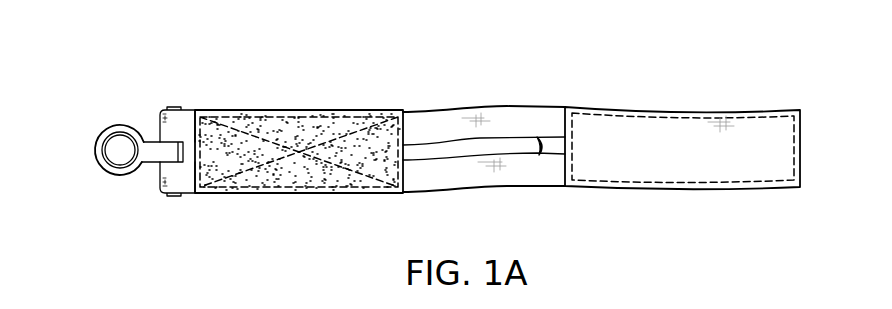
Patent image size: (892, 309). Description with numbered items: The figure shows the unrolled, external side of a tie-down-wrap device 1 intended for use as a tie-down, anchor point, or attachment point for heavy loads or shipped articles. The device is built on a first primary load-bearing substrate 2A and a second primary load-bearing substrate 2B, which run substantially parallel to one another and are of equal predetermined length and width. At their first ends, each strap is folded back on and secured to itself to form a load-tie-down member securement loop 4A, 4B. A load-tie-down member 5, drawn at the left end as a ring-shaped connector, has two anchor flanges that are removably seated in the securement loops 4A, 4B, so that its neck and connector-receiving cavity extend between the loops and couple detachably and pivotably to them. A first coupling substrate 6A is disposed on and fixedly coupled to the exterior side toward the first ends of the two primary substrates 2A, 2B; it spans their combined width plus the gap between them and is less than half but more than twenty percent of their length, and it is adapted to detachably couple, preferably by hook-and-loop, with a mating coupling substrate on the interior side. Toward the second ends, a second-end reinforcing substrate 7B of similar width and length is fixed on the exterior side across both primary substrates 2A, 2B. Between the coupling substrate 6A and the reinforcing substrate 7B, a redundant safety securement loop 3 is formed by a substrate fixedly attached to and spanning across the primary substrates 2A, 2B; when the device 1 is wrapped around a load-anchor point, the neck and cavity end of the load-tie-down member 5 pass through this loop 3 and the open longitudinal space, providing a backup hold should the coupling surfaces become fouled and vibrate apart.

The tie-down-wrap device 1 is at (240, 62).
The first primary load-bearing substrate 2A is at (452, 108).
The second primary load-bearing substrate 2B is at (422, 195).
The redundant safety securement loop 3 is at (547, 150).
The load-tie-down member securement loop 4A is at (160, 110).
The load-tie-down member securement loop 4B is at (157, 180).
The load-tie-down member 5 is at (103, 128).
The first coupling substrate 6A is at (242, 193).
The second-end reinforcing substrate 7B is at (720, 110).